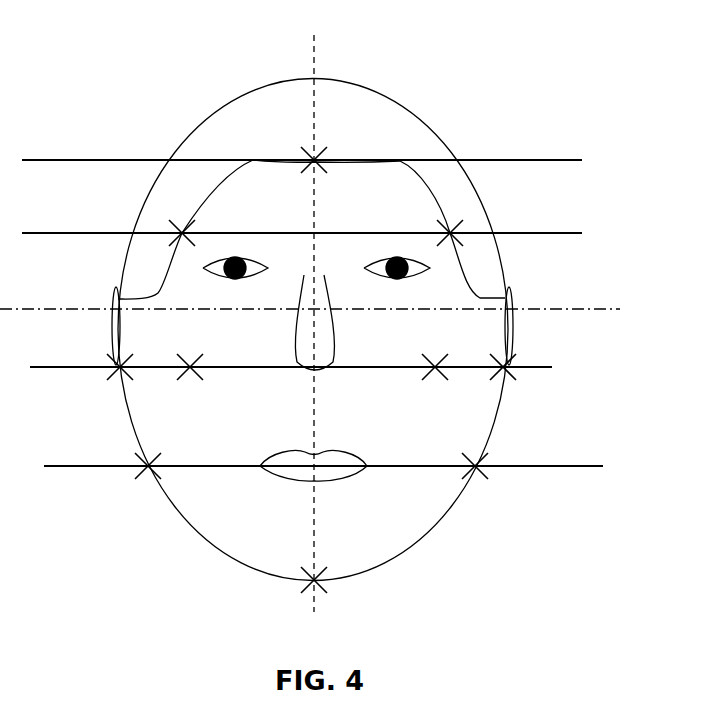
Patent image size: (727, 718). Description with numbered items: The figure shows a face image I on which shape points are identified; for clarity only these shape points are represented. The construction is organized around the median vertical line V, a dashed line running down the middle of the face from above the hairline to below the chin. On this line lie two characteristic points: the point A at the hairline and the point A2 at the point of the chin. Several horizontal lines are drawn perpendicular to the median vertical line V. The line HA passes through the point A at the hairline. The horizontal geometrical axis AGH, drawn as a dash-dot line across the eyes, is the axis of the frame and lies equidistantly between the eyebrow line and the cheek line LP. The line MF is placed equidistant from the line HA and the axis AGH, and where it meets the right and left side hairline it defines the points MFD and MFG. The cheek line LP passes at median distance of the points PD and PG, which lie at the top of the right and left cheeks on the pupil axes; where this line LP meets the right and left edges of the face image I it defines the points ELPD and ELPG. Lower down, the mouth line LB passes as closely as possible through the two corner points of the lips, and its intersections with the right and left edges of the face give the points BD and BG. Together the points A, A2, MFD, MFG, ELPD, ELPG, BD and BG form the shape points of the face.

The median vertical line V is at (313, 60).
The point A is at (314, 160).
The line HA is at (323, 160).
The line MF is at (324, 233).
The point MFD is at (214, 227).
The point MFG is at (418, 227).
The horizontal geometrical axis AGH is at (343, 309).
The point PD is at (190, 359).
The point PG is at (433, 359).
The cheek line LP is at (308, 368).
The point ELPD is at (95, 381).
The point ELPG is at (527, 381).
The point BD is at (129, 481).
The point BG is at (491, 478).
The mouth line LB is at (330, 483).
The face image I is at (448, 543).
The point A2 is at (337, 596).